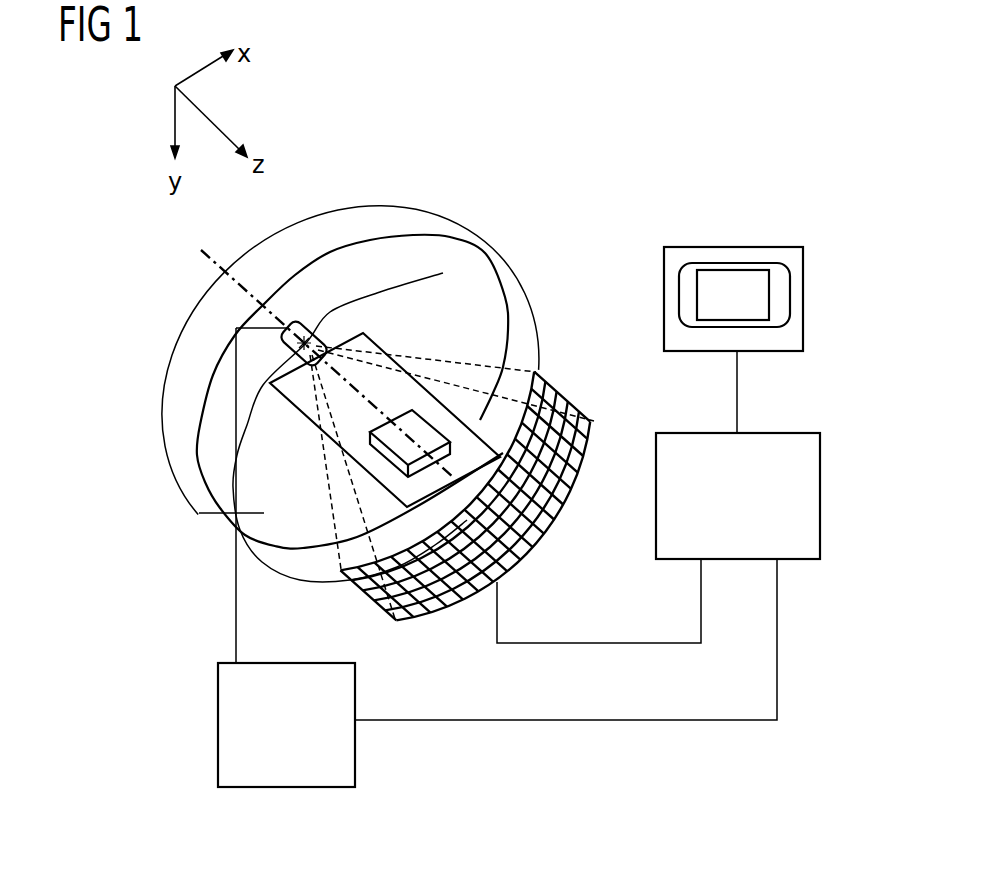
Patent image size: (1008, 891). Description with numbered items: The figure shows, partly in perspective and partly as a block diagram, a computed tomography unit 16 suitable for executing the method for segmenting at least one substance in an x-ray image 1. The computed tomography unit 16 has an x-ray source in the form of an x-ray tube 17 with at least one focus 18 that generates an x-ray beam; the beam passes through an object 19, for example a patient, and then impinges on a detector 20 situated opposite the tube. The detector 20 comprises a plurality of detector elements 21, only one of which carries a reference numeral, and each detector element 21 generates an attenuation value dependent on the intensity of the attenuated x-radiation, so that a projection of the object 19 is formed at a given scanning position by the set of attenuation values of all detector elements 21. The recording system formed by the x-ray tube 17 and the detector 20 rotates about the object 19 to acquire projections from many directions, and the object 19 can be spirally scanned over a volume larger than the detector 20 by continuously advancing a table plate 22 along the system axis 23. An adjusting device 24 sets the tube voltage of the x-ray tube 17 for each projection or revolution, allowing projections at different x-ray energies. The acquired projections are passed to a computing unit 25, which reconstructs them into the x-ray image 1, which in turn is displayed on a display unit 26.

The x-ray image 1 is at (745, 296).
The computed tomography unit 16 is at (533, 162).
The x-ray tube 17 is at (298, 328).
The focus 18 is at (318, 331).
The object 19 is at (418, 428).
The detector 20 is at (468, 522).
The detector element 21 is at (524, 513).
The table plate 22 is at (353, 443).
The system axis 23 is at (207, 254).
The adjusting device 24 is at (217, 718).
The computing unit 25 is at (822, 495).
The display unit 26 is at (764, 276).